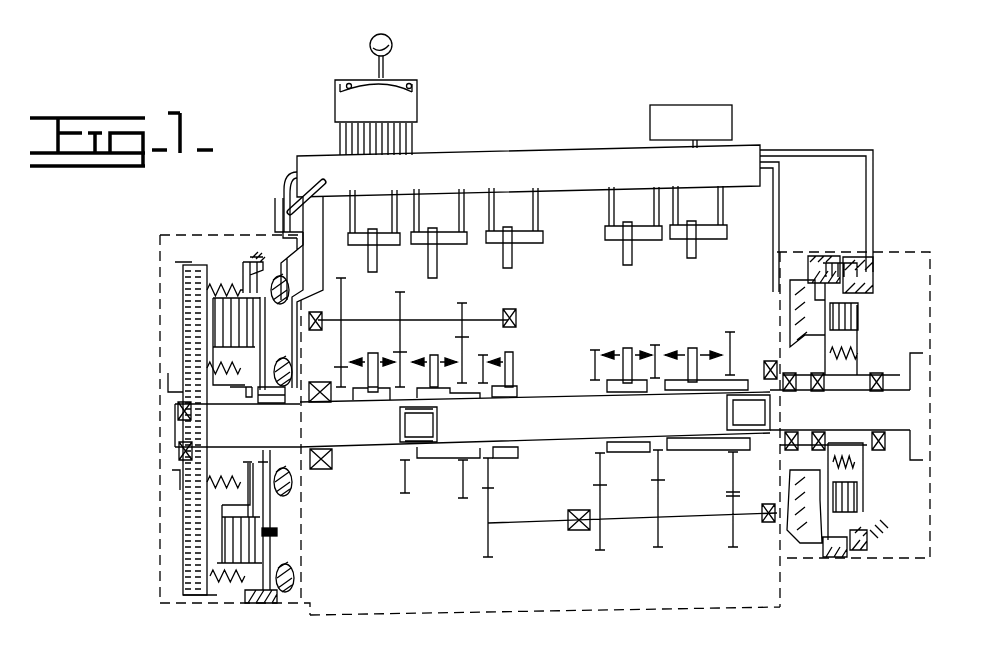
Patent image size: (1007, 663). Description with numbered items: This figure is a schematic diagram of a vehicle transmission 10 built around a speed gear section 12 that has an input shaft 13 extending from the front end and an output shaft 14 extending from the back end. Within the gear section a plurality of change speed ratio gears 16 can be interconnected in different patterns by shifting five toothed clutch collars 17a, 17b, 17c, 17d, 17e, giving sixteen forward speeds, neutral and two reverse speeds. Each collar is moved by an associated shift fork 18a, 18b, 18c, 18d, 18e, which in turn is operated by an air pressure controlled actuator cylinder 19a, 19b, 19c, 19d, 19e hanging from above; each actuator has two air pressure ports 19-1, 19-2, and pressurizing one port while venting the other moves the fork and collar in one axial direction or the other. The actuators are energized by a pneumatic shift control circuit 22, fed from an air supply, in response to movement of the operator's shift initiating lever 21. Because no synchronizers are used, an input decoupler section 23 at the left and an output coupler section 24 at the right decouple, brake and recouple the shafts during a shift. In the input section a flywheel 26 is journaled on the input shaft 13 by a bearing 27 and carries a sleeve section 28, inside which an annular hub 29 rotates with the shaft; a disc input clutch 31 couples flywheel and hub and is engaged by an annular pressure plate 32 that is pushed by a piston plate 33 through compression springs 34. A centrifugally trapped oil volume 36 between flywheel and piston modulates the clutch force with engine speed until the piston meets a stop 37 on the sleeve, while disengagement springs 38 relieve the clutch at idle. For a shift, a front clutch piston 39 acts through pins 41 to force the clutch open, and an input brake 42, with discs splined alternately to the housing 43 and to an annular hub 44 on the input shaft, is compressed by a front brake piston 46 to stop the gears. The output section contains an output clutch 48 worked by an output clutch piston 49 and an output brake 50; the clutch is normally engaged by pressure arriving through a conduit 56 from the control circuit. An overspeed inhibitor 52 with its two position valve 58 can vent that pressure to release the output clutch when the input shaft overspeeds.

The transmission 10 is at (742, 98).
The speed gear section 12 is at (472, 616).
The input shaft 13 is at (247, 436).
The output shaft 14 is at (867, 419).
The change speed ratio gears 16 is at (396, 298).
The clutch collar 17a is at (360, 398).
The clutch collar 17b is at (464, 423).
The clutch collar 17c is at (695, 393).
The clutch collar 17d is at (622, 395).
The clutch collar 17e is at (515, 408).
The shift fork 18a is at (371, 355).
The shift fork 18b is at (433, 356).
The shift fork 18c is at (692, 348).
The shift fork 18d is at (626, 348).
The shift fork 18e is at (520, 352).
The air pressure port 19-1 is at (326, 176).
The air pressure port 19-2 is at (396, 176).
The actuator cylinder 19a is at (355, 243).
The actuator cylinder 19b is at (418, 242).
The actuator cylinder 19c is at (710, 240).
The actuator cylinder 19d is at (643, 240).
The actuator cylinder 19e is at (518, 240).
The shift initiating lever 21 is at (392, 46).
The pneumatic shift control circuit 22 is at (495, 148).
The input decoupler section 23 is at (160, 447).
The output coupler section 24 is at (926, 303).
The flywheel 26 is at (183, 285).
The bearing 27 is at (178, 410).
The sleeve section 28 is at (256, 262).
The annular hub 29 is at (253, 506).
The disc input clutch 31 is at (280, 531).
The pressure plate 32 is at (220, 525).
The piston plate 33 is at (222, 590).
The compression springs 34 is at (212, 483).
The oil volume 36 is at (183, 342).
The stop 37 is at (215, 312).
The disengagement springs 38 is at (223, 293).
The front clutch piston 39 is at (290, 317).
The pins 41 is at (232, 387).
The input brake 42 is at (250, 610).
The housing 43 is at (264, 598).
The annular hub 44 is at (292, 550).
The front brake piston 46 is at (294, 586).
The output clutch 48 is at (866, 483).
The output clutch piston 49 is at (830, 372).
The output brake 50 is at (860, 558).
The overspeed inhibitor 52 is at (272, 186).
The conduit 56 is at (785, 197).
The two position valve 58 is at (278, 222).